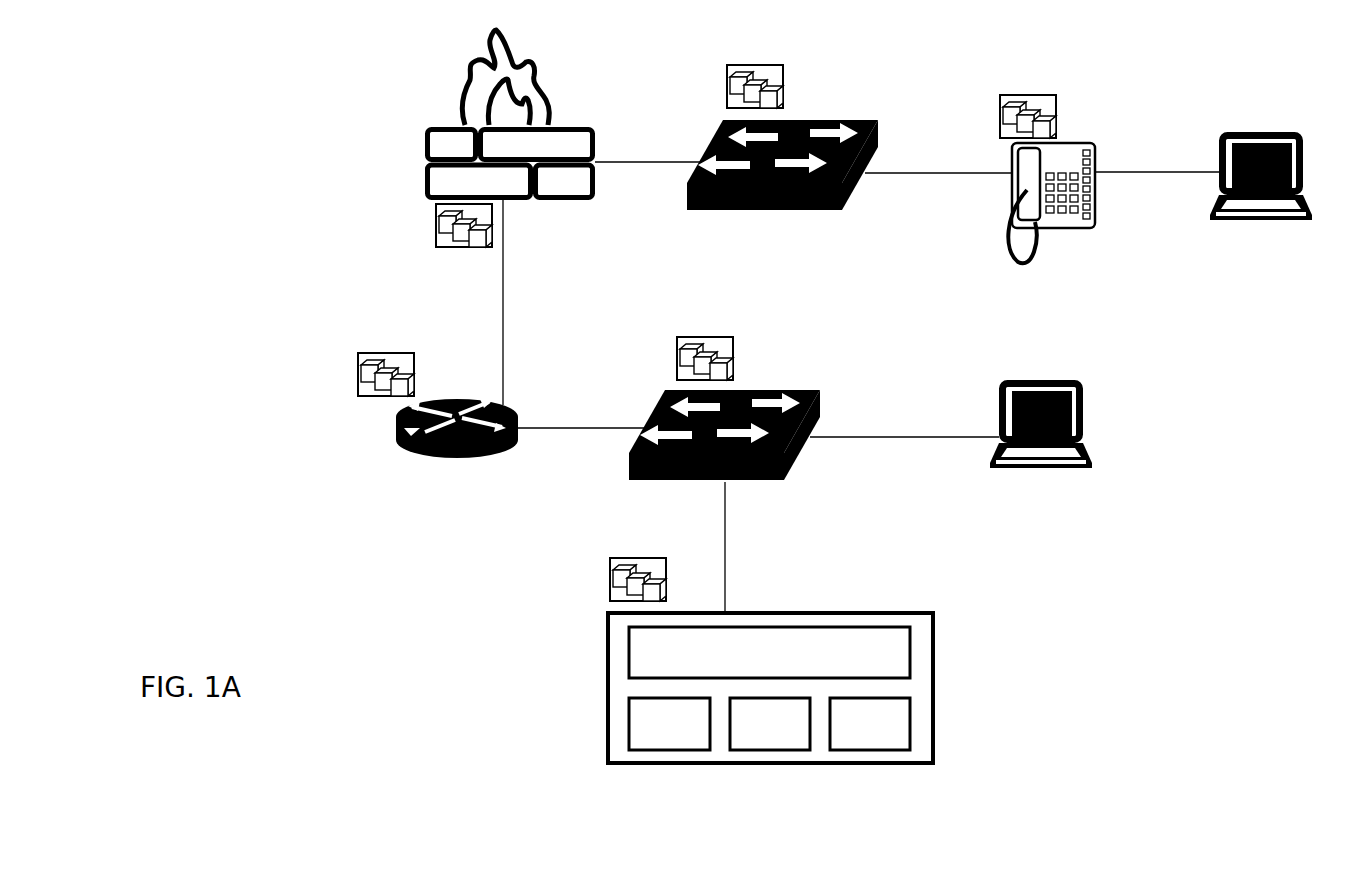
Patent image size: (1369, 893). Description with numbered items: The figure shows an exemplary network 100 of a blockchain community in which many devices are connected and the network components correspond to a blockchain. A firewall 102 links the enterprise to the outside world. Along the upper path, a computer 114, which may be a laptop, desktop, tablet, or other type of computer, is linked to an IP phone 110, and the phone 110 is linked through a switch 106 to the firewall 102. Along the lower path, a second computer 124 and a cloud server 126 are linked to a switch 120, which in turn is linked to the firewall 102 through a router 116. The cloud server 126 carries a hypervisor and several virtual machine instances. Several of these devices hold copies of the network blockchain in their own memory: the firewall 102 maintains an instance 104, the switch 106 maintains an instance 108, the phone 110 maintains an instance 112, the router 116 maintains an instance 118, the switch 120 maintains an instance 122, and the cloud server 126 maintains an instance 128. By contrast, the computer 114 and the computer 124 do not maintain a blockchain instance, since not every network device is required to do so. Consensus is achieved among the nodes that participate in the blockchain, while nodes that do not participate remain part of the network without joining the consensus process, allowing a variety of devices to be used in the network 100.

The network 100 is at (236, 99).
The firewall 102 is at (448, 127).
The instance of the network blockchain 104 is at (437, 222).
The switch 106 is at (820, 120).
The instance of the network blockchain 108 is at (730, 100).
The IP phone 110 is at (1073, 143).
The instance of the network blockchain 112 is at (1003, 132).
The computer 114 is at (1258, 132).
The router 116 is at (450, 458).
The instance of the network blockchain 118 is at (360, 378).
The switch 120 is at (765, 390).
The instance of the network blockchain 122 is at (680, 363).
The computer 124 is at (1022, 388).
The cloud server 126 is at (790, 612).
The instance of the network blockchain 128 is at (618, 595).